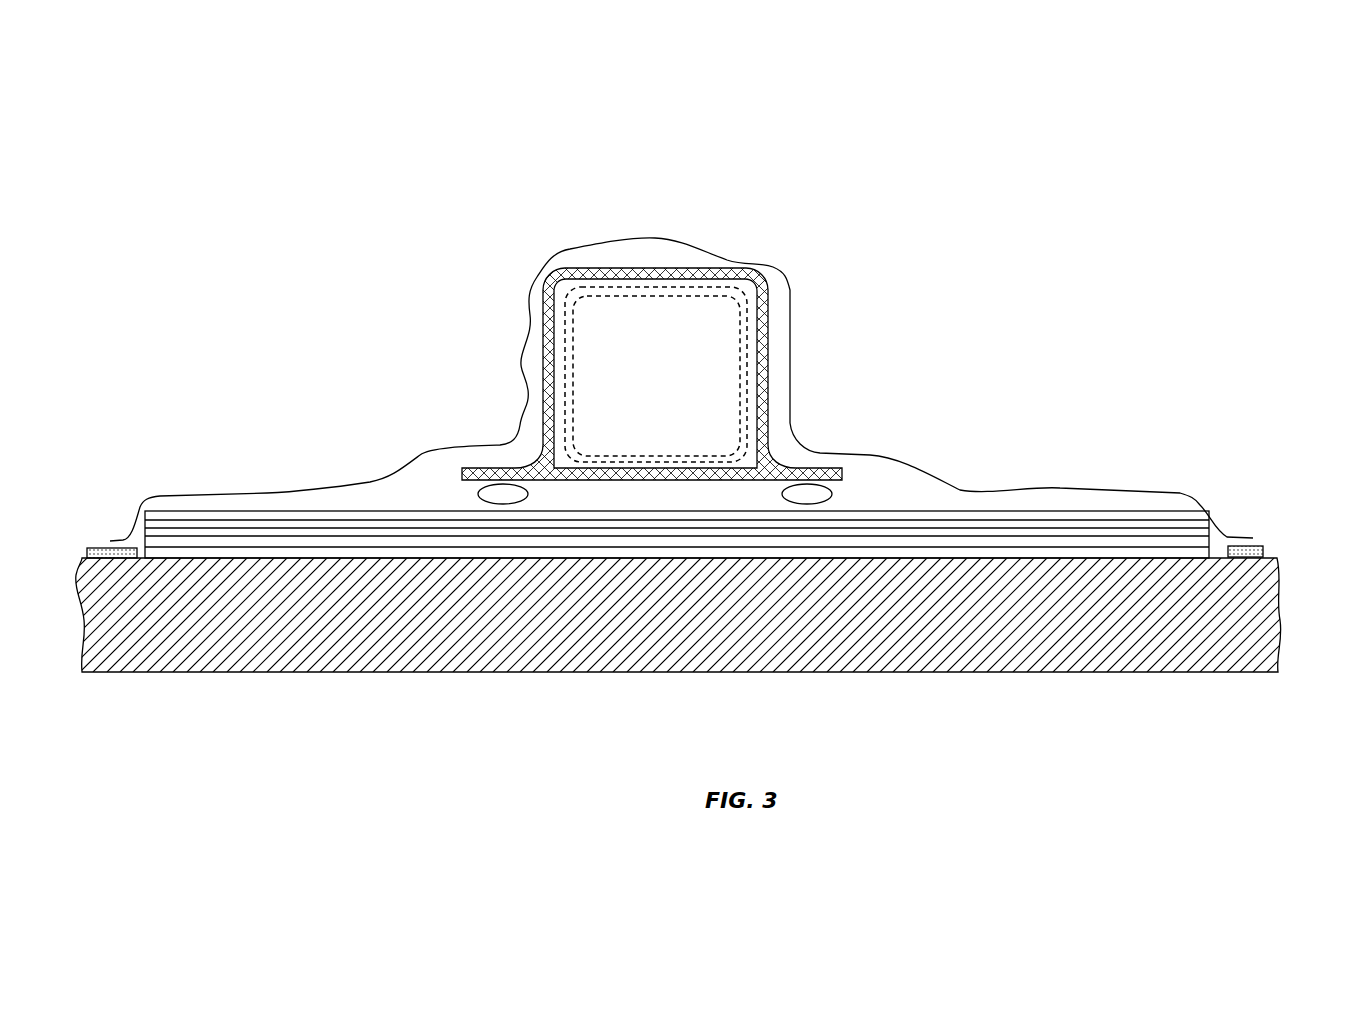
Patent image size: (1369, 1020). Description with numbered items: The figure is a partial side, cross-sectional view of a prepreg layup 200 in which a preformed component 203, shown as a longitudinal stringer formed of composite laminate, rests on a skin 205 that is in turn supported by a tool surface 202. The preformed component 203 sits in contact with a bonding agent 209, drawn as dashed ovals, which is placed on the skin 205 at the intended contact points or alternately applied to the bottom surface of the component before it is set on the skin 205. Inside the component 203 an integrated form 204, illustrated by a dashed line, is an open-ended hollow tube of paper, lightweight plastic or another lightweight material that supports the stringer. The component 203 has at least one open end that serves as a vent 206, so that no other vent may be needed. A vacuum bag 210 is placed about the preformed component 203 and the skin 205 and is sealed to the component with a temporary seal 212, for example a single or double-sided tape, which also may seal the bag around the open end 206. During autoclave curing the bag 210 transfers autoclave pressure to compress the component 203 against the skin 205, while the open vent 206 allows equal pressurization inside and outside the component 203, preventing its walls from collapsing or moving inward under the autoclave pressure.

The prepreg layup 200 is at (334, 158).
The tool surface 202 is at (1280, 607).
The preformed component 203 is at (713, 267).
The integrated form 204 is at (648, 297).
The skin 205 is at (1187, 508).
The open end/vent 206 is at (604, 392).
The bonding agent 209 is at (478, 489).
The vacuum bag 210 is at (630, 238).
The temporary seal 212 is at (102, 545).